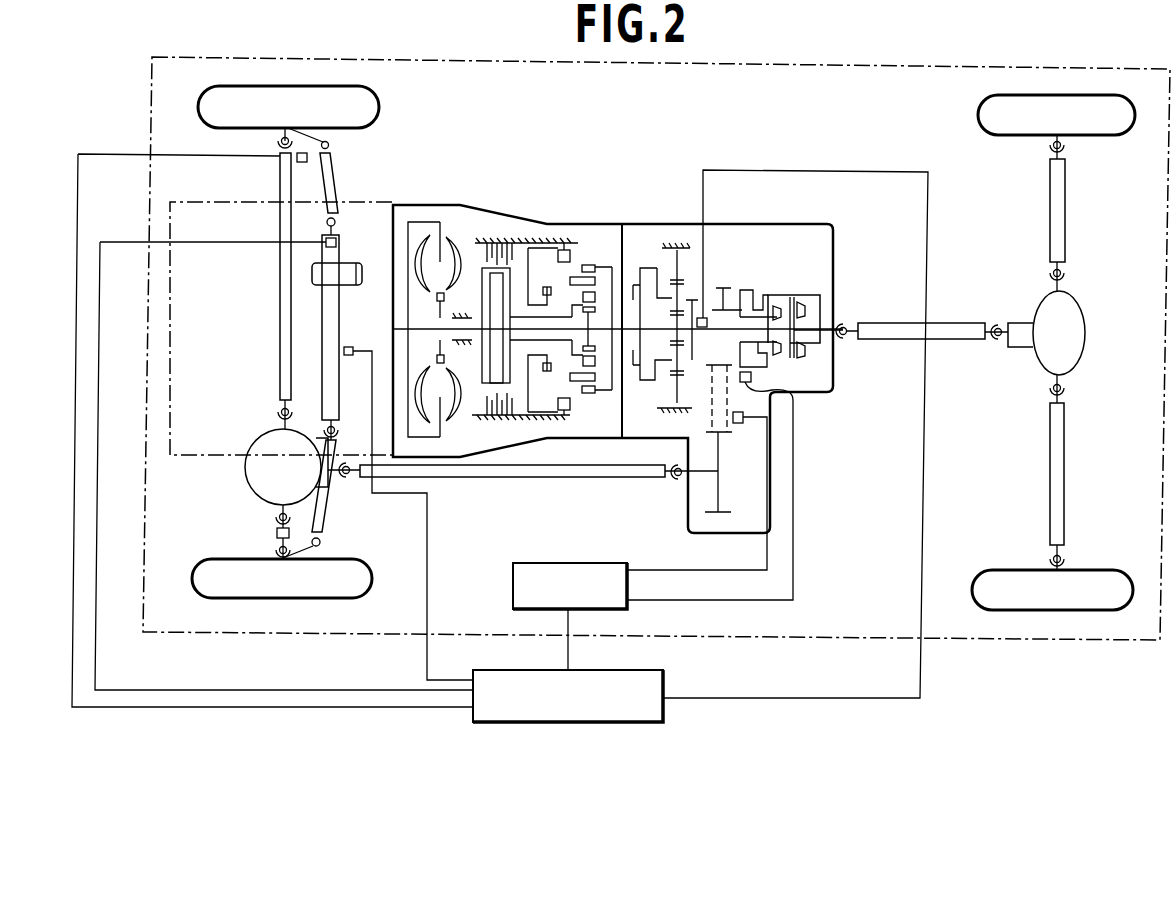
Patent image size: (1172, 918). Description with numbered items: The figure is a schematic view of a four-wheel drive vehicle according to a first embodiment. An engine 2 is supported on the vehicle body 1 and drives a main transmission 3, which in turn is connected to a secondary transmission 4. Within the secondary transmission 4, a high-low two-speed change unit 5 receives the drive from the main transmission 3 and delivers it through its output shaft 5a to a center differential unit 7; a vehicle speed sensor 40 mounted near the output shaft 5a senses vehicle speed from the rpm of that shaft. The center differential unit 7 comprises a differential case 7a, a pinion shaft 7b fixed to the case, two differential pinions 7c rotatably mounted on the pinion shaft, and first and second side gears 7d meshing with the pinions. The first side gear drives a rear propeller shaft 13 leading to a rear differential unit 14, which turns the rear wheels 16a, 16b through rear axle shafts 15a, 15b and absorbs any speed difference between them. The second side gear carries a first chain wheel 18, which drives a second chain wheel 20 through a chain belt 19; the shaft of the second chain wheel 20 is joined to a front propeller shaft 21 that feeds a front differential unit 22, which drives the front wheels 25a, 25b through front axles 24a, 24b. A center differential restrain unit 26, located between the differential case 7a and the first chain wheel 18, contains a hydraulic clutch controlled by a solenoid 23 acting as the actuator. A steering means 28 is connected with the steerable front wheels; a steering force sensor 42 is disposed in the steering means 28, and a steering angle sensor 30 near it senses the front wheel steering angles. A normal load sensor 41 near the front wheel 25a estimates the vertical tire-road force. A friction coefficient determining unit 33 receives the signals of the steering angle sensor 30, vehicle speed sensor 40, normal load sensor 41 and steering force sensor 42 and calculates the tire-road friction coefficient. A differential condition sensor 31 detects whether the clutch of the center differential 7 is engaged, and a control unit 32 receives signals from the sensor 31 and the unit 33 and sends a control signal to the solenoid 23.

The vehicle body 1 is at (897, 65).
The engine 2 is at (190, 200).
The main transmission 3 is at (579, 223).
The secondary transmission 4 is at (757, 223).
The high-low two-speed change unit 5 is at (648, 264).
The output shaft 5a is at (699, 360).
The center differential unit 7 is at (824, 315).
The differential case 7a is at (778, 294).
The pinion shaft 7b is at (790, 353).
The differential pinions 7c is at (778, 348).
The first and second side gears 7d is at (810, 318).
The rear propeller shaft 13 is at (961, 322).
The rear differential unit 14 is at (1084, 350).
The rear axle shaft 15a is at (1050, 187).
The rear axle shaft 15b is at (1050, 466).
The rear wheel 16a is at (1113, 136).
The rear wheel 16b is at (1109, 570).
The first chain wheel 18 is at (730, 286).
The chain belt 19 is at (708, 417).
The second chain wheel 20 is at (719, 468).
The front propeller shaft 21 is at (562, 478).
The front differential unit 22 is at (250, 486).
The solenoid 23 is at (738, 425).
The front axle 24a is at (280, 282).
The front axle 24b is at (277, 535).
The front wheel 25a is at (379, 104).
The front wheel 25b is at (343, 559).
The center differential restrain unit 26 is at (760, 290).
The steering means 28 is at (340, 313).
The steering angle sensor 30 is at (349, 356).
The differential condition sensor 31 is at (752, 379).
The control unit 32 is at (613, 562).
The friction coefficient determining unit 33 is at (666, 677).
The vehicle speed sensor 40 is at (705, 317).
The normal load sensor 41 is at (302, 163).
The steering force sensor 42 is at (339, 243).